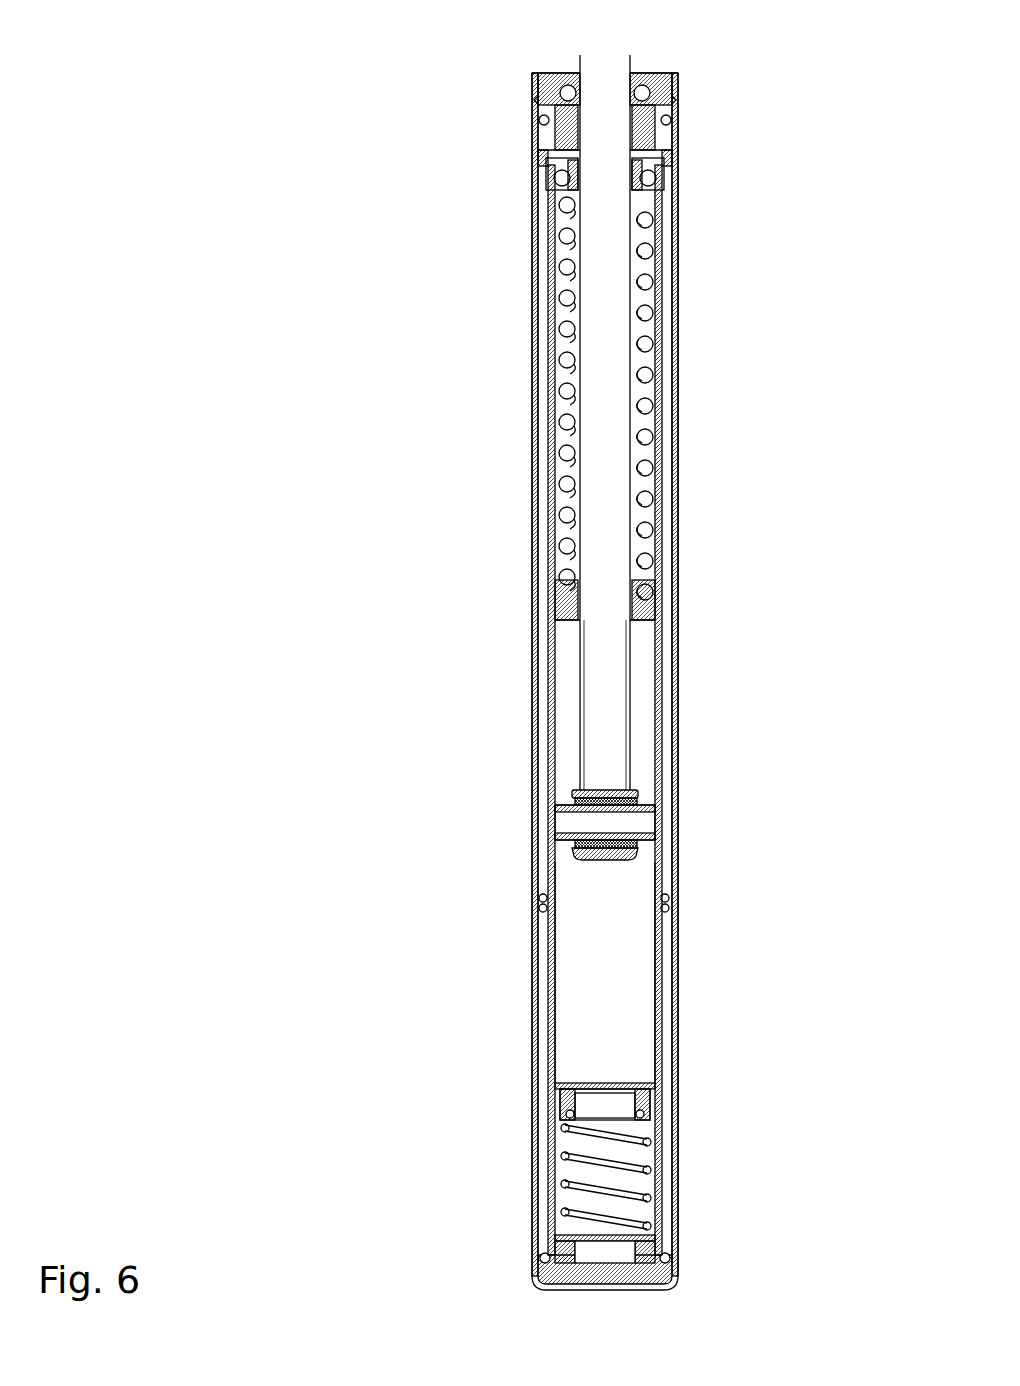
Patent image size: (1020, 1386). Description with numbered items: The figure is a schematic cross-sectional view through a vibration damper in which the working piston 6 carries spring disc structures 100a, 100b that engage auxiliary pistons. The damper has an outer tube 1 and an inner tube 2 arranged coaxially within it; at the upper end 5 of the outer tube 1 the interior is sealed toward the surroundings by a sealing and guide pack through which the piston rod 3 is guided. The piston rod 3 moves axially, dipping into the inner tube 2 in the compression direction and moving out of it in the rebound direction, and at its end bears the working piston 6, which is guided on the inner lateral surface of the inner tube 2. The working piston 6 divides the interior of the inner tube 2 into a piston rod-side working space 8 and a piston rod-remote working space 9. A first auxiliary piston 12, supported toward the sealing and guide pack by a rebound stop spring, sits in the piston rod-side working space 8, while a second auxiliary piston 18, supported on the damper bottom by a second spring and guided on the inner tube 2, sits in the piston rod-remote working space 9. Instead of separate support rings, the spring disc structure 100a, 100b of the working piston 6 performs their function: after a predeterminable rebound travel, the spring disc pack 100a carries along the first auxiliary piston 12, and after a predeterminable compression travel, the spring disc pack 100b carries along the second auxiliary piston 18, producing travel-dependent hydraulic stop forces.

The outer tube 1 is at (533, 235).
The inner tube 2 is at (548, 293).
The piston rod 3 is at (603, 178).
The upper end 5 is at (697, 56).
The working piston 6 is at (640, 818).
The piston rod-side working space 8 is at (566, 733).
The piston rod-remote working space 9 is at (583, 1017).
The first auxiliary piston 12 is at (648, 603).
The second auxiliary piston 18 is at (652, 1099).
The spring disc structure 100a is at (646, 800).
The spring disc structure 100b is at (566, 852).